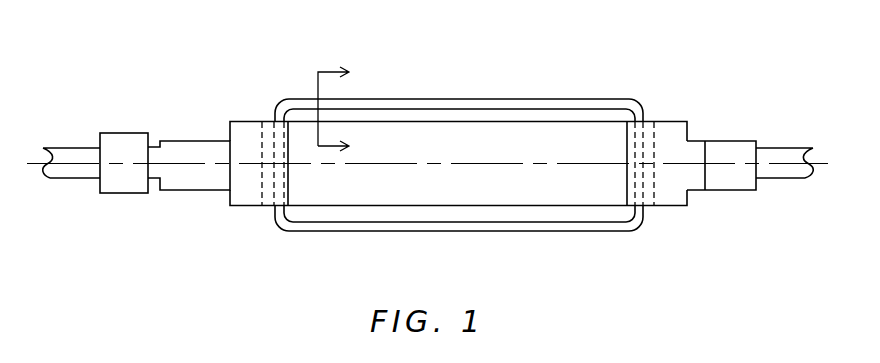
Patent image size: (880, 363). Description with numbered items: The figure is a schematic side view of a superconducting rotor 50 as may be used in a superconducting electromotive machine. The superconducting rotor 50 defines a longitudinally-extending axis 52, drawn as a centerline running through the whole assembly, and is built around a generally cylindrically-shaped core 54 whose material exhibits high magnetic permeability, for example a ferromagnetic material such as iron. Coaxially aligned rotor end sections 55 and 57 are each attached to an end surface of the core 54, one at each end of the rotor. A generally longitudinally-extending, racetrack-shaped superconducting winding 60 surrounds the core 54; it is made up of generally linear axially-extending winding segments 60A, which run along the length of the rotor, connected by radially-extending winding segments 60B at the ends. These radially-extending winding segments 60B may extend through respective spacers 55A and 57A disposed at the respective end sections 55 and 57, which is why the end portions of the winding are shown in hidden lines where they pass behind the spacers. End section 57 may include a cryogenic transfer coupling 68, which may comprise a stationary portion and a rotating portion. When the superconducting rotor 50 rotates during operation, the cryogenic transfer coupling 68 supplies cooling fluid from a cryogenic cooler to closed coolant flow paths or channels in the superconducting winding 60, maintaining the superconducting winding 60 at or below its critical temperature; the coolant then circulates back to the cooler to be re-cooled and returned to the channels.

The superconducting rotor 50 is at (427, 141).
The longitudinally-extending axis 52 is at (447, 163).
The core 54 is at (485, 206).
The rotor end section 55 is at (728, 192).
The spacer 55A is at (648, 207).
The rotor end section 57 is at (195, 192).
The spacer 57A is at (268, 206).
The superconducting winding 60 is at (530, 98).
The axially-extending winding segments 60A is at (607, 98).
The radially-extending winding segments 60B is at (274, 143).
The cryogenic transfer coupling 68 is at (125, 133).